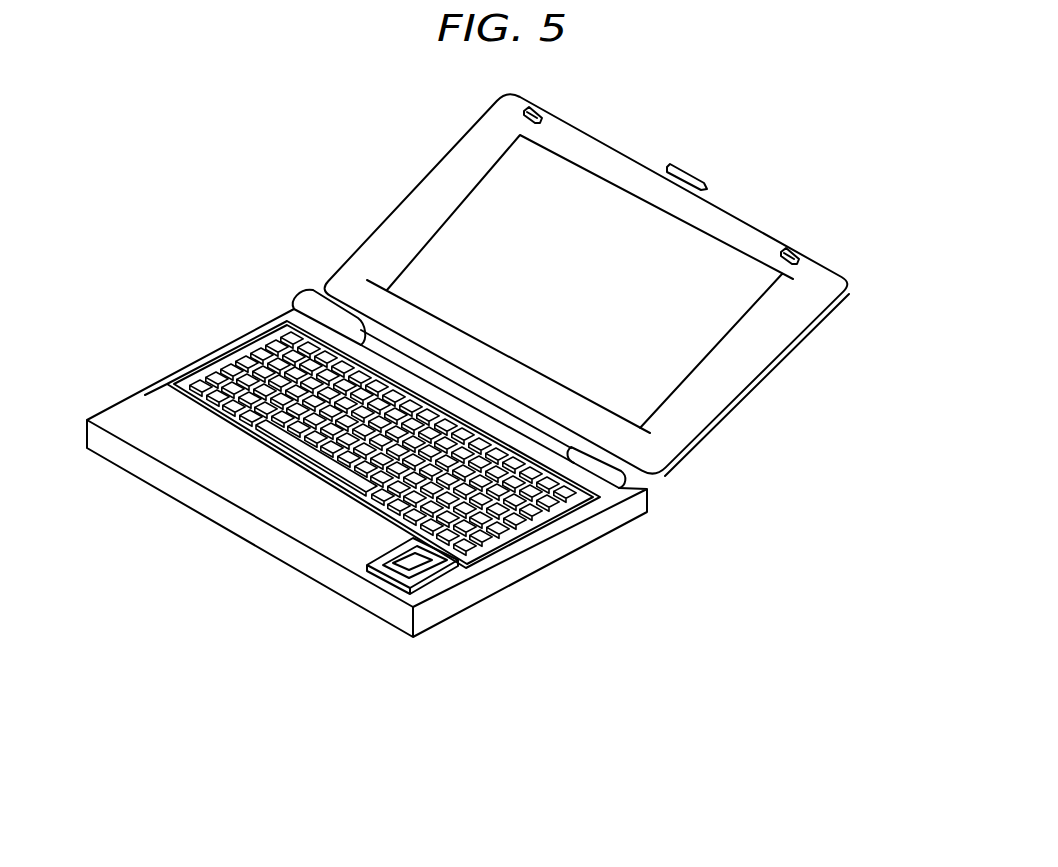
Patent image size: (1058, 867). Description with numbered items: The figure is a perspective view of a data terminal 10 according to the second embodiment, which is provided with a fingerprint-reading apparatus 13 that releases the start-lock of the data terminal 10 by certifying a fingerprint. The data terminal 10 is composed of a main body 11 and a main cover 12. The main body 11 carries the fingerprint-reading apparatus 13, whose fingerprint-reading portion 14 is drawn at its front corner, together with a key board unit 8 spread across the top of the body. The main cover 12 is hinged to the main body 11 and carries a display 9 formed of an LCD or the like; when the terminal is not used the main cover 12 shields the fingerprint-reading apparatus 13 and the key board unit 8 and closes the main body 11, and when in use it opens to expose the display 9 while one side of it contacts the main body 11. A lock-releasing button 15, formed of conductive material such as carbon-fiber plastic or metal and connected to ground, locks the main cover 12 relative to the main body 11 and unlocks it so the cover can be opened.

The key board unit 8 is at (266, 358).
The display 9 is at (545, 166).
The data terminal 10 is at (387, 211).
The main body 11 is at (607, 520).
The main cover 12 is at (690, 430).
The fingerprint-reading apparatus 13 is at (380, 553).
The fingerprint-reading portion 14 is at (430, 566).
The lock-releasing button 15 is at (670, 168).